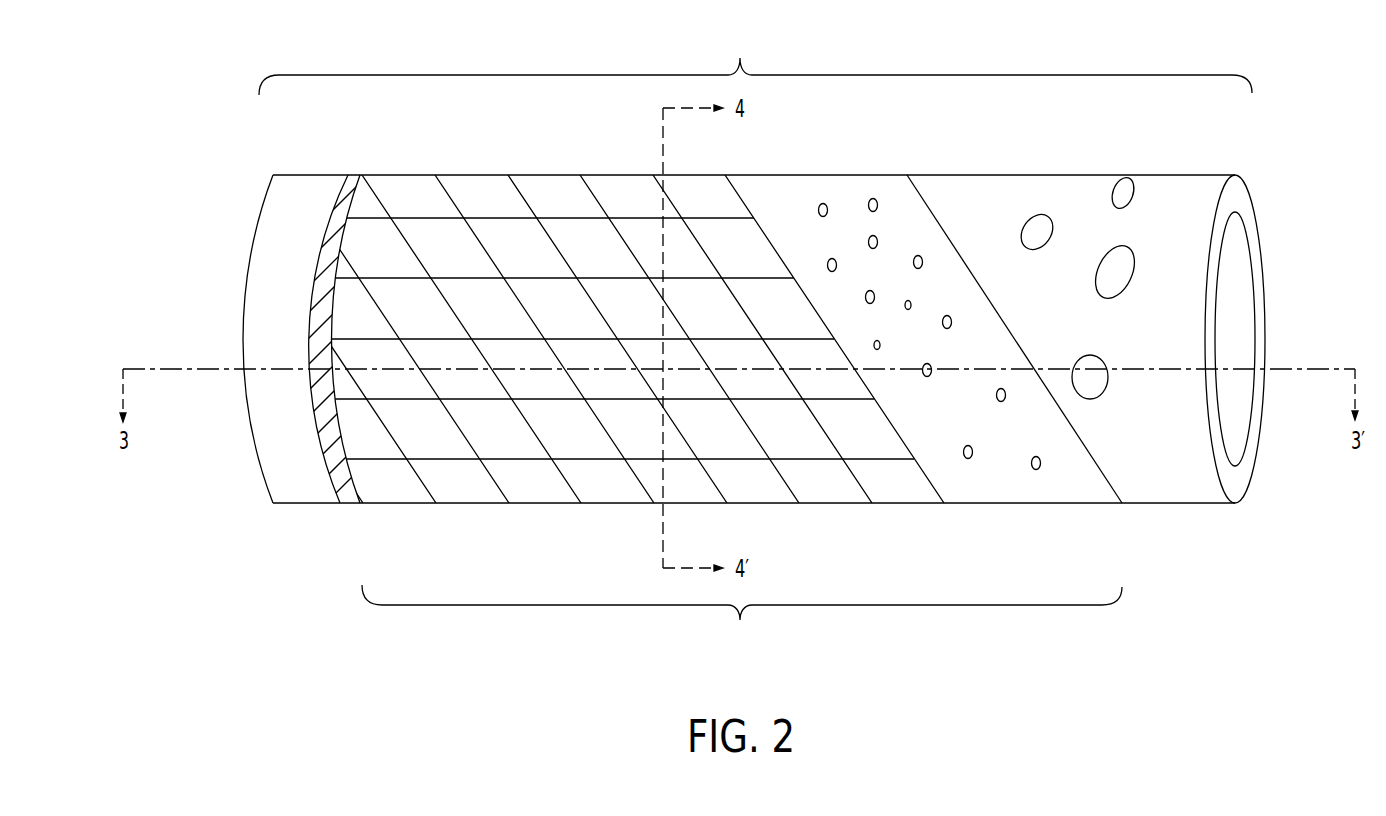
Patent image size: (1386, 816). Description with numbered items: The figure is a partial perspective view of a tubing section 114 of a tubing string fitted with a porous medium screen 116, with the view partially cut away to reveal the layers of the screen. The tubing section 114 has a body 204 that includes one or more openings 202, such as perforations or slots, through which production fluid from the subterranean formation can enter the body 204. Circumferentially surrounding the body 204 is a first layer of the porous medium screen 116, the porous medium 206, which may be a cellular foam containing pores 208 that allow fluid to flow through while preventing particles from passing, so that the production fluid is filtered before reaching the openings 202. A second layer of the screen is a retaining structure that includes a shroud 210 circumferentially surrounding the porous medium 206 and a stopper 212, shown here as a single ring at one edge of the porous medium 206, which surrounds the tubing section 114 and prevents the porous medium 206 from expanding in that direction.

The tubing section 114 is at (755, 60).
The porous medium screen 116 is at (742, 622).
The openings 202 is at (1040, 192).
The body 204 is at (302, 487).
The porous medium 206 is at (784, 192).
The pores 208 is at (999, 420).
The shroud 210 is at (569, 184).
The stopper 212 is at (345, 183).